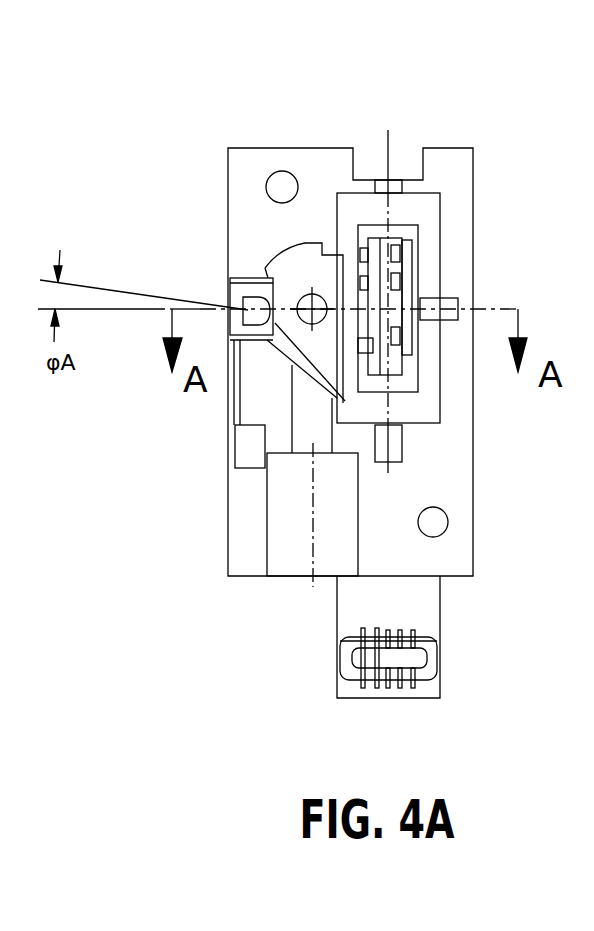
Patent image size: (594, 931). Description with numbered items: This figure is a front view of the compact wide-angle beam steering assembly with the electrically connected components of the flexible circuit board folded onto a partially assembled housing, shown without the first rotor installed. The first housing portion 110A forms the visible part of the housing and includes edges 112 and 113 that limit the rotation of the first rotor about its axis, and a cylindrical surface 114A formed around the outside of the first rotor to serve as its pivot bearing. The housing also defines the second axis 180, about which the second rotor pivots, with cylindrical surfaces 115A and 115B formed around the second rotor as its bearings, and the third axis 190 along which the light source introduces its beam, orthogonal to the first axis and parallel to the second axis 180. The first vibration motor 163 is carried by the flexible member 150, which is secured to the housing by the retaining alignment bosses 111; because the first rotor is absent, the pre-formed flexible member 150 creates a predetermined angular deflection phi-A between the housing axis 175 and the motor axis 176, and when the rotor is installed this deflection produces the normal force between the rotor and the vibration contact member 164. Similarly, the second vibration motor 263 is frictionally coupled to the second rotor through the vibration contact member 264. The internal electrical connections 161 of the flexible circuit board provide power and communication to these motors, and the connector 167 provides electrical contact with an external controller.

The first housing portion 110A is at (237, 180).
The edge 112 is at (266, 270).
The cylindrical surface 114A is at (308, 293).
The edge 113 is at (322, 248).
The second axis 180 is at (392, 162).
The cylindrical surface 115A is at (402, 180).
The cylindrical surface 115B is at (400, 448).
The first vibration motor 163 is at (245, 300).
The motor axis 176 is at (108, 290).
The housing axis 175 is at (153, 313).
The flexible member 150 is at (230, 415).
The retaining alignment boss 111 is at (230, 440).
The third axis 190 is at (312, 557).
The vibration contact member 264 is at (393, 315).
The second vibration motor 263 is at (392, 362).
The vibration contact member 164 is at (345, 401).
The internal electrical connections 161 is at (427, 600).
The connector 167 is at (430, 673).